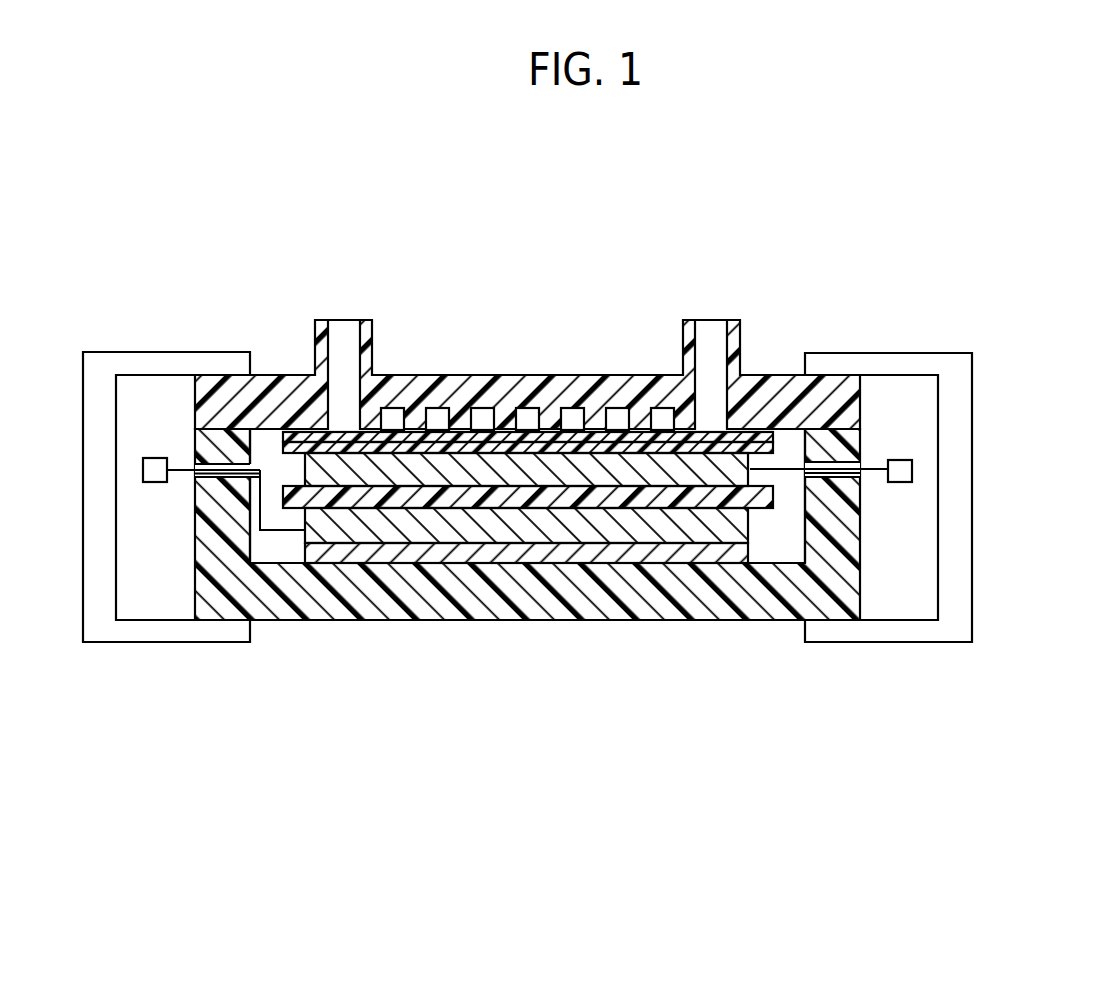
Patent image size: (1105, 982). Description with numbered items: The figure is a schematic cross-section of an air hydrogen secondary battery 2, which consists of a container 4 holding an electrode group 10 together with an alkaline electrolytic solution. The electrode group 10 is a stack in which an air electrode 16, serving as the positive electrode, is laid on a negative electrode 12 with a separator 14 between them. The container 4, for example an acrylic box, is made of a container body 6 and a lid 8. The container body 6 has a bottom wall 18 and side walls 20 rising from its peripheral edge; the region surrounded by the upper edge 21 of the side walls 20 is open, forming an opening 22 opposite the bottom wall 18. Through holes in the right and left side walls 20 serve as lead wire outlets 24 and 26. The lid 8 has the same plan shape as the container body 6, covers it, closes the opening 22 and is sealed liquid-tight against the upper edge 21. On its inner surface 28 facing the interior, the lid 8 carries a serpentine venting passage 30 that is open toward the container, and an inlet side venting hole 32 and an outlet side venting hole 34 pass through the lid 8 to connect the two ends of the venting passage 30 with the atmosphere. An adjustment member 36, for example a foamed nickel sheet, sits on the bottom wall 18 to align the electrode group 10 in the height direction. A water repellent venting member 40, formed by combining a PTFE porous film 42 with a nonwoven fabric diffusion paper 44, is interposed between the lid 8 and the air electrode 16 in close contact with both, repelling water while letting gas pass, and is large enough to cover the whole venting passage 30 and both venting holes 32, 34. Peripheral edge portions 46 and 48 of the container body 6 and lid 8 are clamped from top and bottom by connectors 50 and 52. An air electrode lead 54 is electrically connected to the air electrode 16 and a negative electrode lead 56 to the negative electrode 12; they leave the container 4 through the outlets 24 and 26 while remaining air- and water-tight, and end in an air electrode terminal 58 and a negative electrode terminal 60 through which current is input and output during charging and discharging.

The battery 2 is at (897, 288).
The container 4 is at (1038, 410).
The container body 6 is at (862, 530).
The lid 8 is at (862, 403).
The electrode group 10 is at (700, 699).
The negative electrode 12 is at (537, 533).
The separator 14 is at (600, 500).
The air electrode 16 is at (662, 470).
The bottom wall 18 is at (428, 621).
The side wall 20 is at (194, 558).
The upper edge 21 is at (218, 428).
The opening 22 is at (266, 433).
The lead wire outlet 24 is at (862, 468).
The lead wire outlet 26 is at (193, 466).
The inner surface 28 is at (787, 437).
The venting passage 30 is at (608, 418).
The inlet side venting hole 32 is at (340, 335).
The outlet side venting hole 34 is at (724, 336).
The adjustment member 36 is at (331, 557).
The water repellent venting member 40 is at (547, 301).
The PTFE porous film 42 is at (462, 445).
The nonwoven fabric diffusion paper 44 is at (522, 437).
The peripheral edge portion 46 is at (208, 621).
The peripheral edge portion 48 is at (848, 621).
The connector 50 is at (108, 352).
The connector 52 is at (947, 353).
The air electrode lead 54 is at (783, 472).
The negative electrode lead 56 is at (277, 532).
The air electrode terminal 58 is at (902, 483).
The negative electrode terminal 60 is at (155, 483).